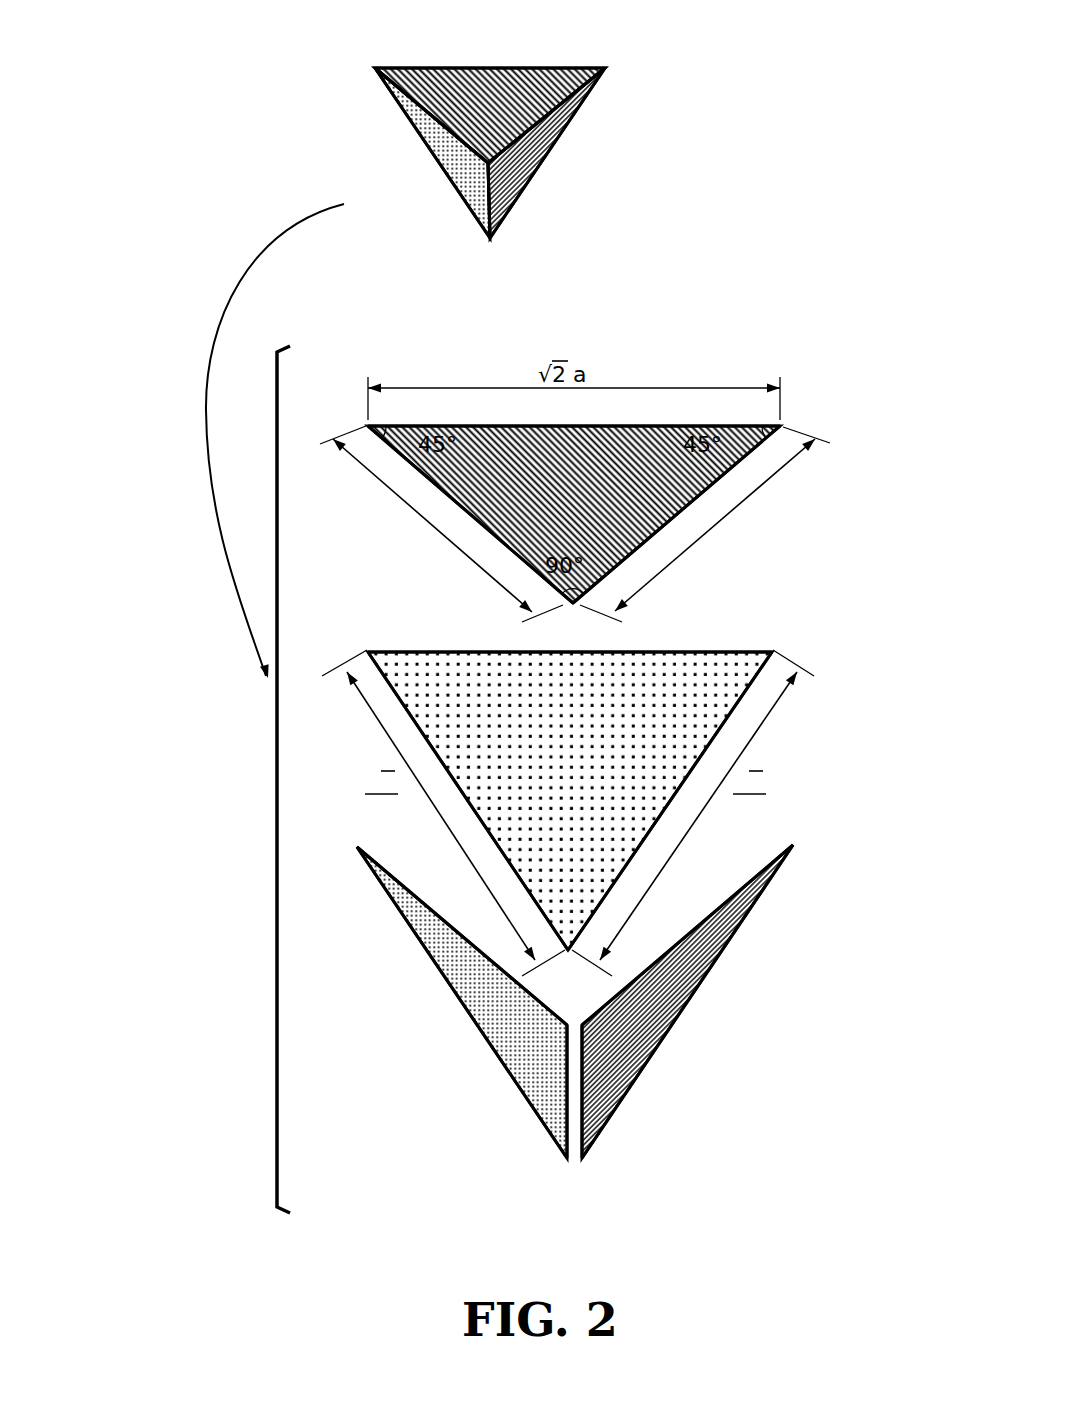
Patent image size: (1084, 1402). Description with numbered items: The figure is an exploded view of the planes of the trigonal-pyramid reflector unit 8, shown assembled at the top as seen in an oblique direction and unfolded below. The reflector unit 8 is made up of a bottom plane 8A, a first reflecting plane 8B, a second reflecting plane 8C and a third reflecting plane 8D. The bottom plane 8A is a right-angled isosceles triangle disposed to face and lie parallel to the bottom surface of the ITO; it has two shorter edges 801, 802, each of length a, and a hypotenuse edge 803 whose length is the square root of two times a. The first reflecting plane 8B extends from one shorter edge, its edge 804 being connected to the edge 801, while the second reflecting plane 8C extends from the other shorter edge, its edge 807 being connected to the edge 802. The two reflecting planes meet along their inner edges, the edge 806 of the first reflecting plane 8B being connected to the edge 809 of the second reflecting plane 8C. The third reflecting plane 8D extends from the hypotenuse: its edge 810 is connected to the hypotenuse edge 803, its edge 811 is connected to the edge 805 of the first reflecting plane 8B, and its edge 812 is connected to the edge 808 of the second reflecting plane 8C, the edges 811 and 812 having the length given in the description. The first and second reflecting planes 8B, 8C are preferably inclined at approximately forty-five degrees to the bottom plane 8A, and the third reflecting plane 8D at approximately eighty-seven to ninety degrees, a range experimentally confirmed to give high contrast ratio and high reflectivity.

The reflector unit 8 is at (540, 50).
The bottom plane 8A is at (504, 117).
The first reflecting plane 8B is at (548, 156).
The second reflecting plane 8C is at (445, 166).
The third reflecting plane 8D is at (474, 194).
The shorter edge 801 is at (713, 485).
The shorter edge 802 is at (432, 483).
The hypotenuse edge 803 is at (620, 423).
The edge of the first reflecting plane 804 is at (683, 937).
The edge of the first reflecting plane 805 is at (665, 1037).
The edge of the first reflecting plane 806 is at (582, 1158).
The edge of the second reflecting plane 807 is at (462, 935).
The edge of the second reflecting plane 808 is at (478, 1030).
The edge of the second reflecting plane 809 is at (568, 1158).
The edge of the third reflecting plane 810 is at (657, 648).
The edge of the third reflecting plane 811 is at (667, 800).
The edge of the third reflecting plane 812 is at (467, 802).